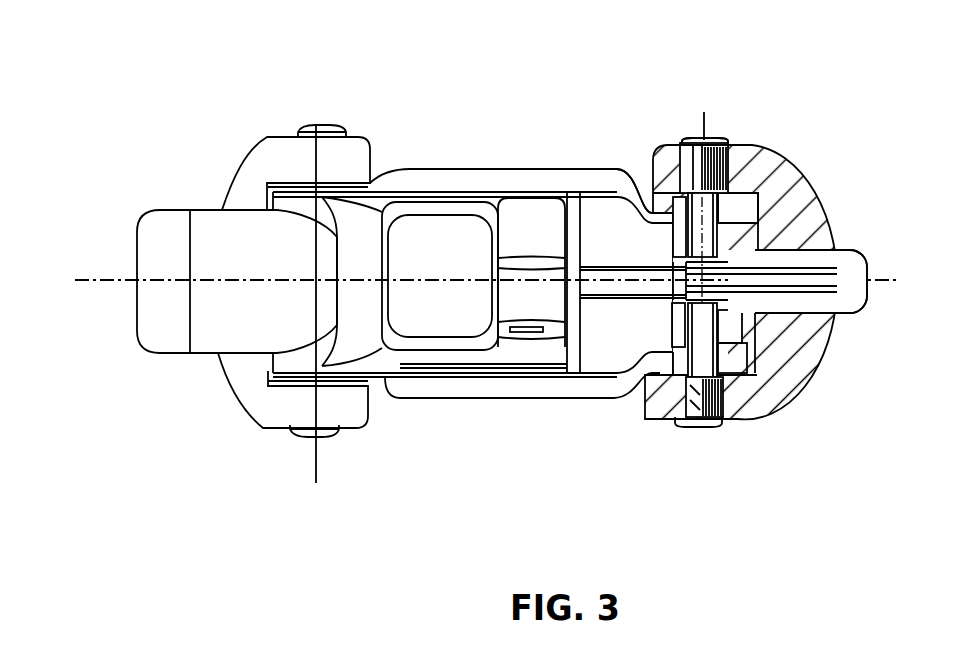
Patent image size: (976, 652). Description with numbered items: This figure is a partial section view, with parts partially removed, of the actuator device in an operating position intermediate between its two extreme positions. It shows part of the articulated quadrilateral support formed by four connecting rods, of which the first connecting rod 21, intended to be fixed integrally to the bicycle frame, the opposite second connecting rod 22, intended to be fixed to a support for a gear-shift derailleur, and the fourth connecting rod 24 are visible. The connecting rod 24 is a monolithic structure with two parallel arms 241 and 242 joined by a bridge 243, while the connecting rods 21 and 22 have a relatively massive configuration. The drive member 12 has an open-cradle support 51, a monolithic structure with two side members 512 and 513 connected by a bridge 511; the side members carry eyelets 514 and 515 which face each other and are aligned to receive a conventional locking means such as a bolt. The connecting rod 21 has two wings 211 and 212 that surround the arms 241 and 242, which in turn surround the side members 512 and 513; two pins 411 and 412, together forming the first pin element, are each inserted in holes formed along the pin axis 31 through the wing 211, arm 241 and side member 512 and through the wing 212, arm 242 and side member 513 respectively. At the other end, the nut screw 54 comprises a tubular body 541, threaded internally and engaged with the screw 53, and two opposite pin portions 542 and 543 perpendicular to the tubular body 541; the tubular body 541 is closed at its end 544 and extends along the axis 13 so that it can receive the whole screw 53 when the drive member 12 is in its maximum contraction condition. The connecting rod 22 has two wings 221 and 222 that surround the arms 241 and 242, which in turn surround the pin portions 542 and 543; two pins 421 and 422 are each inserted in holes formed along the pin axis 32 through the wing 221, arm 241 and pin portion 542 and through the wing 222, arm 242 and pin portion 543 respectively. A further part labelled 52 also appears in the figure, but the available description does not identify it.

The drive member 12 is at (128, 314).
The axis 13 is at (118, 280).
The first connecting rod 21 is at (218, 378).
The wing 211 is at (283, 408).
The wing 212 is at (270, 153).
The second connecting rod 22 is at (786, 146).
The wing 221 is at (745, 407).
The wing 222 is at (740, 163).
The fourth connecting rod 24 is at (511, 152).
The arm 241 is at (572, 391).
The arm 242 is at (567, 178).
The bridge 243 is at (590, 210).
The pin axis 31 is at (312, 465).
The pin axis 32 is at (706, 122).
The pin 411 is at (316, 437).
The pin 412 is at (317, 122).
The pin 421 is at (700, 432).
The pin 422 is at (693, 137).
The open-cradle support 51 is at (388, 400).
The bridge 511 is at (433, 233).
The side member 512 is at (443, 343).
The side member 513 is at (445, 213).
The eyelet 514 is at (530, 306).
The eyelet 515 is at (528, 220).
The shaft end portion 52 is at (157, 235).
The screw 53 is at (617, 287).
The nut screw 54 is at (655, 319).
The tubular body 541 is at (841, 250).
The pin portion 542 is at (722, 333).
The pin portion 543 is at (730, 232).
The end 544 is at (877, 293).